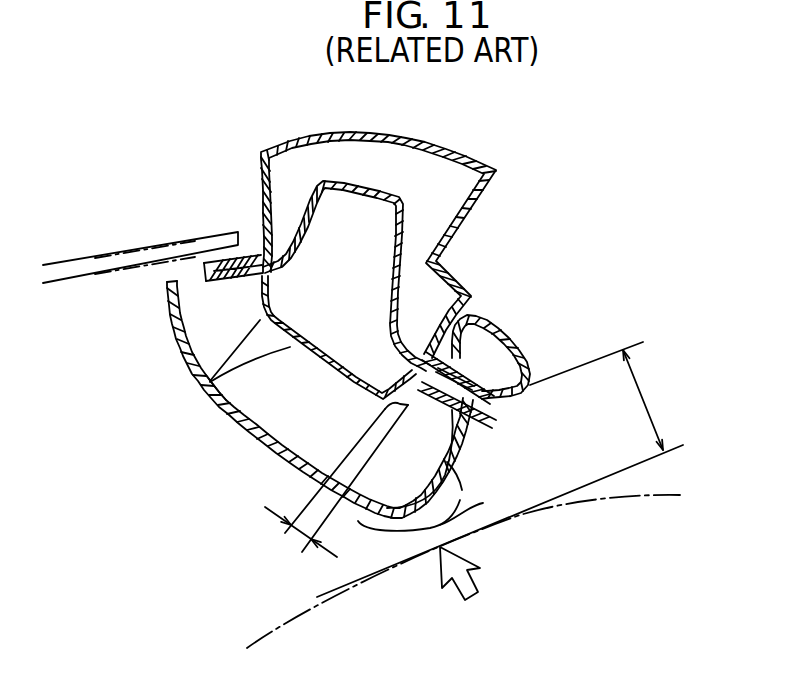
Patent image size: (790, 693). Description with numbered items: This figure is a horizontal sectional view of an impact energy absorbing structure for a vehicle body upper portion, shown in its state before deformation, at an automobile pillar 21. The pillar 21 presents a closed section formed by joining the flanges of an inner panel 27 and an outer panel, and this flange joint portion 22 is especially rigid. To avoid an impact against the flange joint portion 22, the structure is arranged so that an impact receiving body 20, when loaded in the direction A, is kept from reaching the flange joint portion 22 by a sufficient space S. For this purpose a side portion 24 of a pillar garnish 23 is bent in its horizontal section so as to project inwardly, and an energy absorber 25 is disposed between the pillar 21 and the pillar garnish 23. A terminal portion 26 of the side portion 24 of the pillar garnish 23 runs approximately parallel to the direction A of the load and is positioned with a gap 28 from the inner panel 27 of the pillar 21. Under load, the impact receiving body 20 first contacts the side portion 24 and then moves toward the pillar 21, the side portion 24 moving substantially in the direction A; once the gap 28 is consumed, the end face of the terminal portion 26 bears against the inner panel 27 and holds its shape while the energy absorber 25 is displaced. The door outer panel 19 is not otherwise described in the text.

The door outer panel 19 is at (475, 501).
The impact receiving body 20 is at (287, 620).
The pillar 21 is at (427, 143).
The flange joint portion 22 is at (481, 367).
The pillar garnish 23 is at (181, 355).
The side portion of pillar garnish 24 is at (472, 465).
The energy absorber 25 is at (272, 423).
The terminal portion 26 is at (346, 519).
The inner panel 27 is at (210, 382).
The gap 28 is at (298, 531).
The space S is at (500, 469).
The direction of load A is at (480, 560).